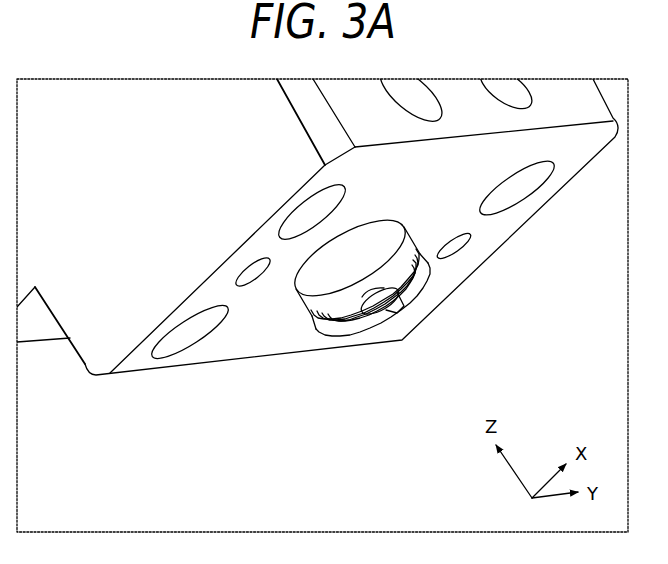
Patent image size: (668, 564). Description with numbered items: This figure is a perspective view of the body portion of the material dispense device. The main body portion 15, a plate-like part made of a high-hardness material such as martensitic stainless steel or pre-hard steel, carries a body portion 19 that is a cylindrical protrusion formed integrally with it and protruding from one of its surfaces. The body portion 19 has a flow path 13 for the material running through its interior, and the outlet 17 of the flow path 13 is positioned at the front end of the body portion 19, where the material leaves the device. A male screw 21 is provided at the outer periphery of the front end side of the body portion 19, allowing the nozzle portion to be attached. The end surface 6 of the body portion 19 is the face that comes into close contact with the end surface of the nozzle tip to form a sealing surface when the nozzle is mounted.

The main body portion 15 is at (104, 345).
The body portion 19 is at (299, 295).
The male screw 21 is at (313, 330).
The end surface 6 is at (352, 332).
The outlet 17 is at (392, 307).
The flow path 13 is at (384, 309).